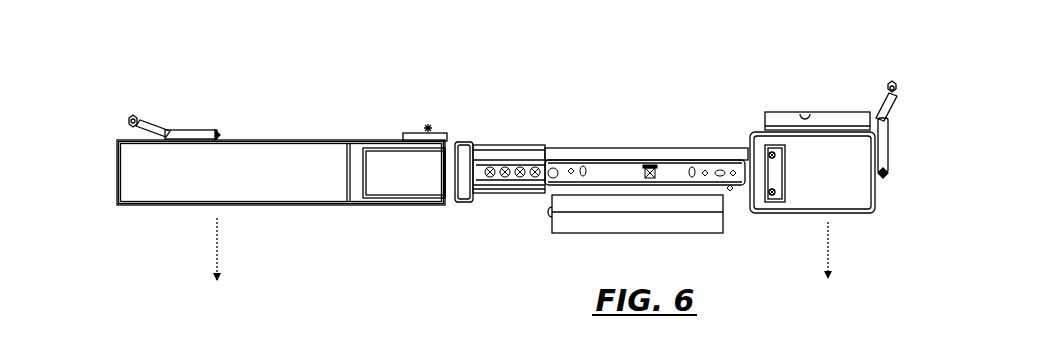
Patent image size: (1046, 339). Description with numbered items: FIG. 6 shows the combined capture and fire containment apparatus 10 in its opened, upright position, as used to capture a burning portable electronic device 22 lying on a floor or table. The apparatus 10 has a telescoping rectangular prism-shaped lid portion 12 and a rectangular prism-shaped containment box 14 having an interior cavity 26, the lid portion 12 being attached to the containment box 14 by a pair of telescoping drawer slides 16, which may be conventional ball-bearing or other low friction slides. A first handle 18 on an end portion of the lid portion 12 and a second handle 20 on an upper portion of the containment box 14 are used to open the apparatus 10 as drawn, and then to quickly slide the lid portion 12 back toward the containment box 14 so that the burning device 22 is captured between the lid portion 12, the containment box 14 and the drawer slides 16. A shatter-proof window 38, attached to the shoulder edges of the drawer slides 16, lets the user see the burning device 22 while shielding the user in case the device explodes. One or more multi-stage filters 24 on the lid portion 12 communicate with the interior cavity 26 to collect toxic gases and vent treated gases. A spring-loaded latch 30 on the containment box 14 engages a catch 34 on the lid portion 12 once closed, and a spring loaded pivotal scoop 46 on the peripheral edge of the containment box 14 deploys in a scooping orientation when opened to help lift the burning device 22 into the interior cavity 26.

The combined capture and fire containment apparatus 10 is at (369, 94).
The lid portion 12 is at (858, 198).
The containment box 14 is at (142, 207).
The telescoping drawer slides 16 is at (548, 194).
The first handle 18 is at (895, 80).
The second handle 20 is at (128, 122).
The burning portable electronic device 22 is at (630, 218).
The multi-stage filter 24 is at (832, 123).
The interior cavity 26 is at (186, 184).
The spring-loaded latch 30 is at (360, 190).
The catch 34 is at (778, 185).
The shatter-proof window 38 is at (607, 150).
The spring loaded pivotal scoop 46 is at (455, 200).